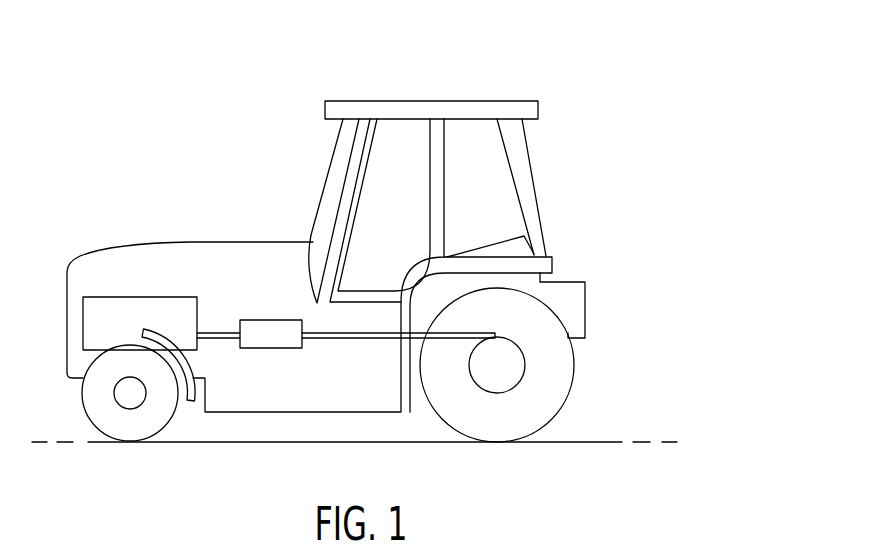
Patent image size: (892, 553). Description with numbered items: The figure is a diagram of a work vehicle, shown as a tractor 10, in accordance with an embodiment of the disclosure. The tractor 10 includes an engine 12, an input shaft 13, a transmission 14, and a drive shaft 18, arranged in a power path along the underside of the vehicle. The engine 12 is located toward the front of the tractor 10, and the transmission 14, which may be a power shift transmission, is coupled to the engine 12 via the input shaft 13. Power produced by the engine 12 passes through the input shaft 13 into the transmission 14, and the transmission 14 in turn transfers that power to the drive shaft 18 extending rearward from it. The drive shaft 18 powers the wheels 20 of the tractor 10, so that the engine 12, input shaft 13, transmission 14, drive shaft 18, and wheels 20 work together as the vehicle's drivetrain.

The tractor 10 is at (533, 70).
The engine 12 is at (138, 297).
The input shaft 13 is at (218, 333).
The transmission 14 is at (272, 349).
The drive shaft 18 is at (375, 338).
The wheels 20 is at (553, 382).